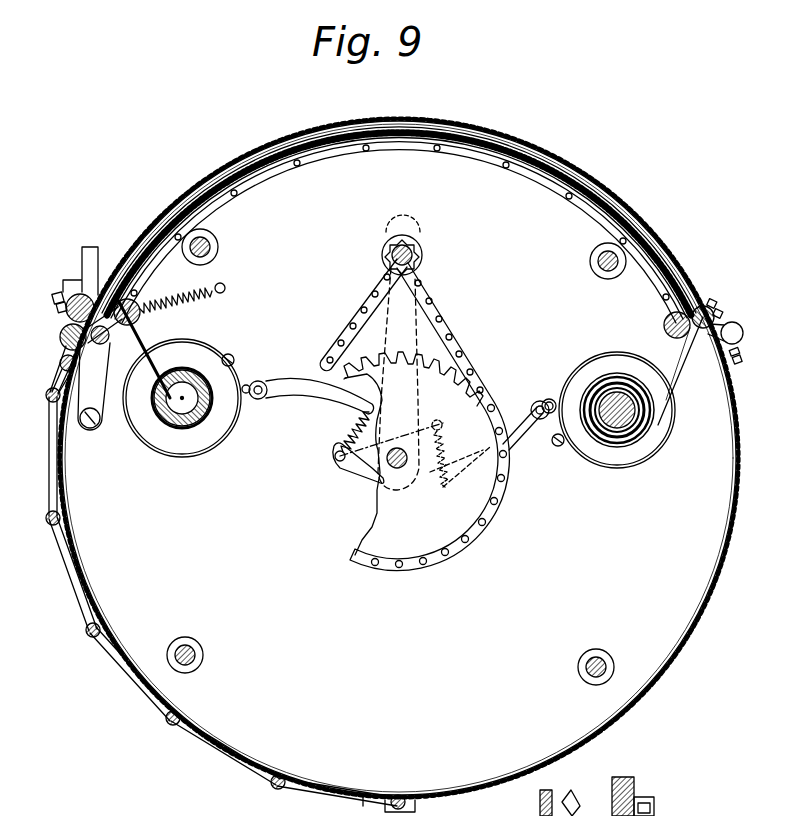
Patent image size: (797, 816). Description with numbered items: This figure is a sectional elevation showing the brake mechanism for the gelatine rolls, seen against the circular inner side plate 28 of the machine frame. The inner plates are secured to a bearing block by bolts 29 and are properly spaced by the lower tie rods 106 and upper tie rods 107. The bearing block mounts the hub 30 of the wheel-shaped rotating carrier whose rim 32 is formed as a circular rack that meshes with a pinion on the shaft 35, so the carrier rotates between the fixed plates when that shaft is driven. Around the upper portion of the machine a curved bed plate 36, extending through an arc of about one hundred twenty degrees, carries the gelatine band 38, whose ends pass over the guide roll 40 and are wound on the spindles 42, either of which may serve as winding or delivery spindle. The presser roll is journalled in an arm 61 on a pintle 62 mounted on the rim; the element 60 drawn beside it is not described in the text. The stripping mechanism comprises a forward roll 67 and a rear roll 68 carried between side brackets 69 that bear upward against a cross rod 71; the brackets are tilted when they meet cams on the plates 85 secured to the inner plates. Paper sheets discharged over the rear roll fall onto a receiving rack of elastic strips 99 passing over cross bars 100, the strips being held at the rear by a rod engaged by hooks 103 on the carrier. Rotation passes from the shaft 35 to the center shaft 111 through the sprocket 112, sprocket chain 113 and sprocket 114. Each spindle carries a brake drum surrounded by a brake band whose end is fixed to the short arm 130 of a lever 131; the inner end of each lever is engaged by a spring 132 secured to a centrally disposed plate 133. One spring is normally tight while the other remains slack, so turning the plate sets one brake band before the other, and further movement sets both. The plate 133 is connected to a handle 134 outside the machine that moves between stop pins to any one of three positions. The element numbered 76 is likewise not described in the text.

The inner circular side plate 28 is at (205, 450).
The bolt 29 is at (200, 305).
The hub 30 is at (678, 364).
The rim 32 is at (735, 562).
The shaft 35 is at (410, 250).
The curved bed plate 36 is at (625, 232).
The gelatine band 38 is at (688, 356).
The guide roll 40 is at (664, 325).
The spindle 42 is at (205, 385).
The pin 60 is at (708, 307).
The arm 61 is at (740, 325).
The pintle 62 is at (738, 363).
The forward roll 67 is at (58, 298).
The rear roll 68 is at (61, 341).
The side bracket 69 is at (90, 262).
The cross rod 71 is at (76, 366).
The rim 76 is at (645, 692).
The plate 85 is at (100, 424).
The elastic fabric strip 99 is at (293, 795).
The cross bar 100 is at (92, 637).
The hook 103 is at (410, 807).
The lower tie rod 106 is at (203, 658).
The upper tie rod 107 is at (218, 247).
The center shaft 111 is at (405, 448).
The sprocket 112 is at (412, 278).
The sprocket chain 113 is at (356, 300).
The sprocket 114 is at (498, 479).
The short arm 130 is at (262, 384).
The lever 131 is at (300, 396).
The spring 132 is at (345, 434).
The plate 133 is at (360, 478).
The handle 134 is at (410, 318).